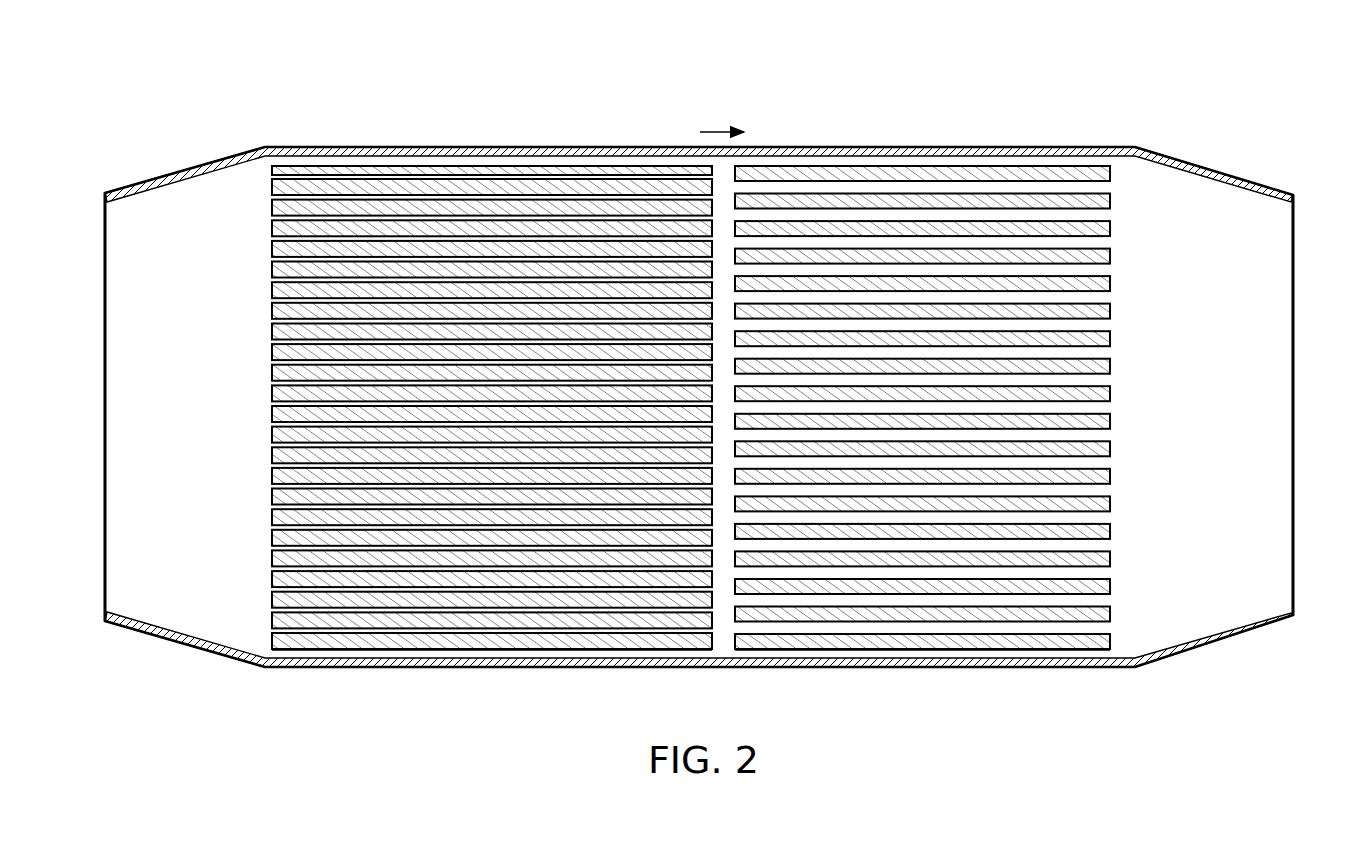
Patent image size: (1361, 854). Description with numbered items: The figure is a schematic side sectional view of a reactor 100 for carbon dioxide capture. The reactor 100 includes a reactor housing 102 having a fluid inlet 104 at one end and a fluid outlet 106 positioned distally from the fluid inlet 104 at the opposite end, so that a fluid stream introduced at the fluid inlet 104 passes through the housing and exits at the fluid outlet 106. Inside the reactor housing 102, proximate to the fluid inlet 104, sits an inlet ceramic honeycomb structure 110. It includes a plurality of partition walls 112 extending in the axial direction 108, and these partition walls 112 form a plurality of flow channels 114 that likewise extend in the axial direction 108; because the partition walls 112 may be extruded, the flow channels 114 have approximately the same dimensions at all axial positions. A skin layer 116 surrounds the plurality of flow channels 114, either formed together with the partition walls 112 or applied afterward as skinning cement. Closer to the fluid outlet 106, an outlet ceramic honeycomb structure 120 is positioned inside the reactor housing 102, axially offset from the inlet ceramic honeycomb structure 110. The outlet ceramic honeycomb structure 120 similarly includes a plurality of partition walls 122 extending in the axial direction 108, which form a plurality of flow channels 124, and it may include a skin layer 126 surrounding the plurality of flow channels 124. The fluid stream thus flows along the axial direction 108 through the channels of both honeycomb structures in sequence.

The reactor 100 is at (699, 370).
The reactor housing 102 is at (1176, 652).
The fluid inlet 104 is at (105, 367).
The fluid outlet 106 is at (1293, 307).
The axial direction 108 is at (718, 132).
The inlet ceramic honeycomb structure 110 is at (442, 407).
The partition walls 112 is at (276, 600).
The flow channels 114 is at (278, 591).
The skin layer 116 is at (688, 652).
The outlet ceramic honeycomb structure 120 is at (981, 407).
The partition walls 122 is at (1110, 533).
The flow channels 124 is at (1110, 571).
The skin layer 126 is at (1068, 652).